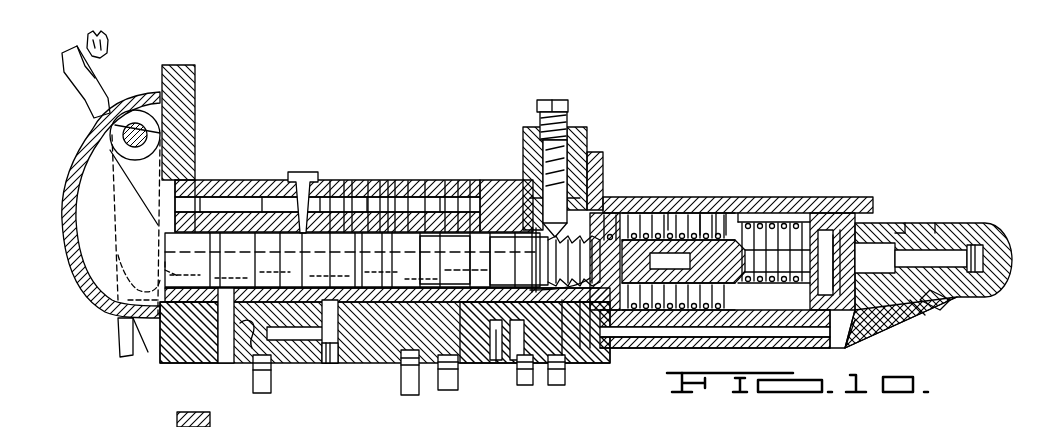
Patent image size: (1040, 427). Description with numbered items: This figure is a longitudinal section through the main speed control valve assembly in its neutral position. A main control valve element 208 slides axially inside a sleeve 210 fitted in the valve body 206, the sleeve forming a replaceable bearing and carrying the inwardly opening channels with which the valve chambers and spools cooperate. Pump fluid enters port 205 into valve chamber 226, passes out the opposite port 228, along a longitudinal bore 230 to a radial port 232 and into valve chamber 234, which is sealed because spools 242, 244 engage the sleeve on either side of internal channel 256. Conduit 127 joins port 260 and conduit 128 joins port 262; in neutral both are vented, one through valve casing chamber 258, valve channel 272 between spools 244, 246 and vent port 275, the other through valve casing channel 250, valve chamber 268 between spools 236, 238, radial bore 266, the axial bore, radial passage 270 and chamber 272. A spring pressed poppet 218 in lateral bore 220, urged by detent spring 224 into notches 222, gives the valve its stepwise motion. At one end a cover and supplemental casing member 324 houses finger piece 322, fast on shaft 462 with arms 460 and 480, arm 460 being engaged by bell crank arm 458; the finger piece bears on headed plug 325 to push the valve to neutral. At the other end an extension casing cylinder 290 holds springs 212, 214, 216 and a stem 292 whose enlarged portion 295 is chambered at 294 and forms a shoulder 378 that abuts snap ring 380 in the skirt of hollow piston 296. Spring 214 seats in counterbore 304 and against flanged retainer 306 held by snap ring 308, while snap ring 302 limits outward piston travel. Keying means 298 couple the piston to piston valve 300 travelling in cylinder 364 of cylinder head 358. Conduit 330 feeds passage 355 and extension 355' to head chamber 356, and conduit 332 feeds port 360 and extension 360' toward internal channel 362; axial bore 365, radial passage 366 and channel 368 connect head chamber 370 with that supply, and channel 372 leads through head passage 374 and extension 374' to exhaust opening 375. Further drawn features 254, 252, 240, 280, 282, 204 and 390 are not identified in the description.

The arm of bell crank 458 is at (108, 48).
The arm 460 is at (101, 85).
The shaft 462 is at (130, 135).
The finger piece 322 is at (112, 170).
The combined cover and supplemental casing member 324 is at (70, 215).
The headed plug 325 is at (130, 284).
The arm 480 is at (136, 358).
The valve spool 244 is at (248, 205).
The valve casing chamber 258 is at (248, 210).
The valve chamber 272 is at (243, 225).
The valve spool 246 is at (222, 205).
The valve chamber 234 is at (292, 174).
The plate 254 is at (337, 185).
The valve spool 242 is at (343, 200).
The internal channel 256 is at (349, 215).
The radial port 232 is at (365, 212).
The plate 252 is at (387, 212).
The plate 240 is at (378, 210).
The valve spool 238 is at (393, 220).
The valve casing channel 250 is at (406, 215).
The valve spool 236 is at (423, 215).
The valve chamber 226 is at (445, 215).
The port 228 is at (457, 215).
The longitudinal bore 230 is at (468, 215).
The sleeve 210 is at (492, 220).
The detent spring 224 is at (535, 185).
The spring pressed poppet 218 is at (545, 200).
The lateral bore 220 is at (566, 165).
The radial passage 270 is at (352, 260).
The radial bore 266 is at (445, 260).
The valve channel 268 is at (490, 270).
The main control valve element 208 is at (530, 266).
The notches 222 is at (545, 291).
The valve body 206 is at (360, 355).
The vent port 275 is at (222, 357).
The port 260 is at (250, 345).
The conduit 127 is at (271, 380).
The slot 280 is at (295, 334).
The passage 282 is at (335, 318).
The port 262 is at (398, 328).
The conduit 128 is at (405, 390).
The pin 204 is at (446, 392).
The port 205 is at (455, 318).
The exhaust opening 375 is at (494, 362).
The extension of head passage 374' is at (476, 376).
The conduit 332 is at (516, 360).
The port 360 is at (529, 383).
The conduit 330 is at (558, 385).
The passage 355 is at (579, 356).
The snap ring 308 is at (598, 350).
The flanged retainer 306 is at (605, 320).
The extension passage 355' is at (715, 348).
The shoulder 378 is at (722, 300).
The helical compression spring 216 is at (630, 213).
The extension casing cylinder 290 is at (638, 215).
The stem 292 is at (683, 261).
The coil 390 is at (672, 213).
The snap ring 380 is at (730, 215).
The counterbore 304 is at (720, 215).
The helical compression spring 214 is at (700, 213).
The hollow cylindrical piston 296 is at (740, 220).
The spring 212 is at (752, 222).
The chamber 294 is at (775, 283).
The enlarged portion of stem 295 is at (768, 222).
The snap ring 302 is at (826, 213).
The head chamber 356 is at (828, 240).
The keying means 298 is at (838, 245).
The piston valve 300 is at (845, 245).
The extension of passage 360' is at (715, 339).
The cylinder head 358 is at (940, 223).
The radial passage 366 is at (882, 270).
The axial bore 365 is at (931, 259).
The head chamber 370 is at (970, 245).
The internal channel 362 is at (912, 223).
The peripheral piston valve channel 368 is at (898, 232).
The channel 372 is at (945, 300).
The head passage 374 is at (945, 321).
The cylinder 364 is at (850, 348).